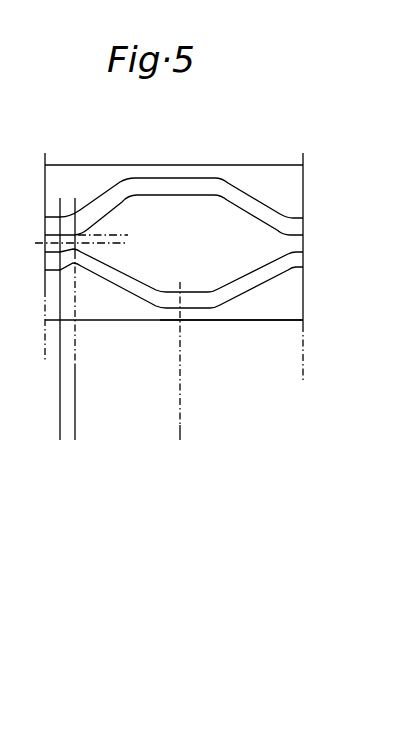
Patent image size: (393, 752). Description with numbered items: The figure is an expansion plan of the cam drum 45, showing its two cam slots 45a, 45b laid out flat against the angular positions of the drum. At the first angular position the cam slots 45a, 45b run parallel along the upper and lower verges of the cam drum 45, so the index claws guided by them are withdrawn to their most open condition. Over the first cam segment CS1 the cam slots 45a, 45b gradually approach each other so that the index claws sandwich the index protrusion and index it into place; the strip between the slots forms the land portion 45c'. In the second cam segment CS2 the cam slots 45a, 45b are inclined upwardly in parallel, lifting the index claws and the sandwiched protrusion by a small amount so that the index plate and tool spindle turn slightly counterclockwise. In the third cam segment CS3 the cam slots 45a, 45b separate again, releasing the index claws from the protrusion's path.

The cam drum 45 is at (252, 322).
The cam slot 45a is at (167, 174).
The cam slot 45b is at (148, 289).
The land portion 45c' is at (233, 244).
The first cam segment CS1 is at (310, 433).
The second cam segment CS2 is at (75, 433).
The third cam segment CS3 is at (180, 433).